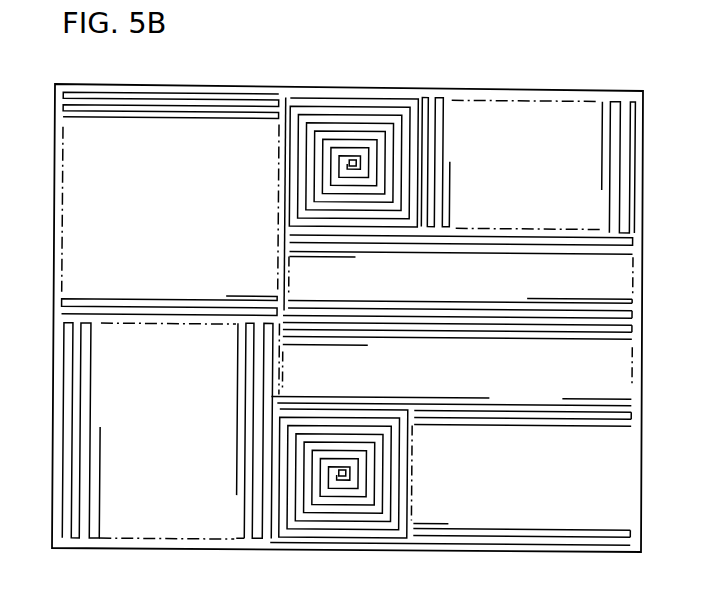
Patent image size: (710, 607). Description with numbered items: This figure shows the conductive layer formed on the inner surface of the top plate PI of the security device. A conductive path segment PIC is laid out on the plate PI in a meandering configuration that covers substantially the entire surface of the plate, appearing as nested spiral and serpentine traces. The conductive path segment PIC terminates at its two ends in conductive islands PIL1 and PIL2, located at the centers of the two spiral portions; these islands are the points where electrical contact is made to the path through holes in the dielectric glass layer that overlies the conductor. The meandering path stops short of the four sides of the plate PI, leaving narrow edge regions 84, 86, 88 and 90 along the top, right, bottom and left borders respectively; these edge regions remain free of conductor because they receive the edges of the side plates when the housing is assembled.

The conductive island PIL1 is at (356, 158).
The conductive island PIL2 is at (349, 480).
The conductive path segment PIC is at (446, 127).
The narrow edge region 84 is at (568, 93).
The plate PI is at (652, 255).
The narrow edge region 90 is at (57, 297).
The narrow edge region 86 is at (641, 329).
The narrow edge region 88 is at (565, 547).